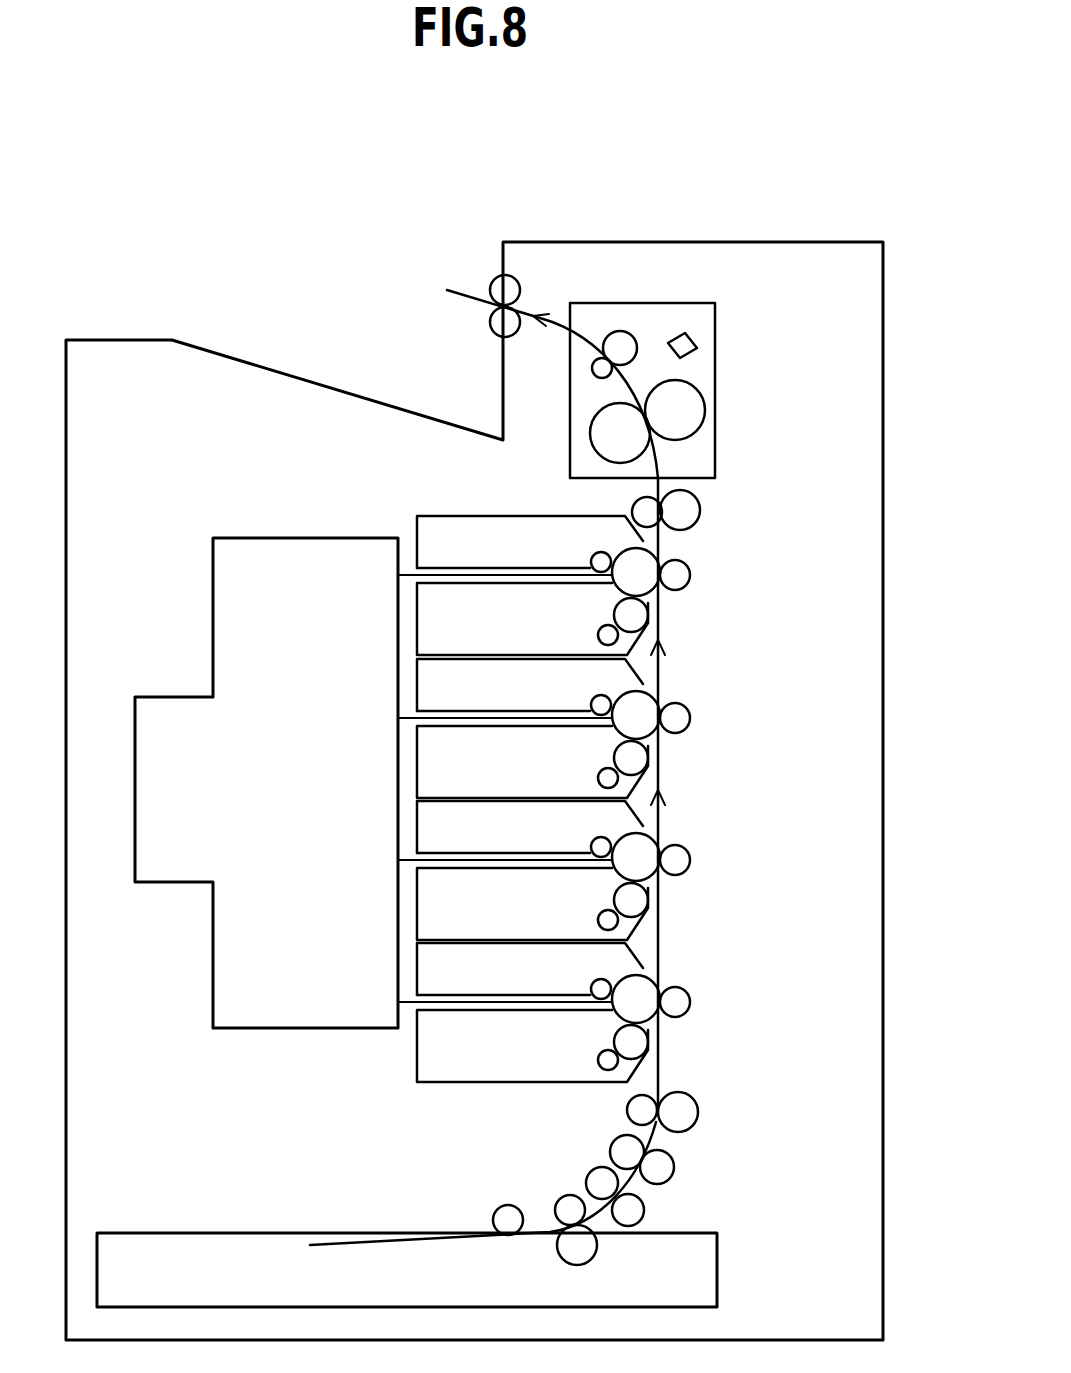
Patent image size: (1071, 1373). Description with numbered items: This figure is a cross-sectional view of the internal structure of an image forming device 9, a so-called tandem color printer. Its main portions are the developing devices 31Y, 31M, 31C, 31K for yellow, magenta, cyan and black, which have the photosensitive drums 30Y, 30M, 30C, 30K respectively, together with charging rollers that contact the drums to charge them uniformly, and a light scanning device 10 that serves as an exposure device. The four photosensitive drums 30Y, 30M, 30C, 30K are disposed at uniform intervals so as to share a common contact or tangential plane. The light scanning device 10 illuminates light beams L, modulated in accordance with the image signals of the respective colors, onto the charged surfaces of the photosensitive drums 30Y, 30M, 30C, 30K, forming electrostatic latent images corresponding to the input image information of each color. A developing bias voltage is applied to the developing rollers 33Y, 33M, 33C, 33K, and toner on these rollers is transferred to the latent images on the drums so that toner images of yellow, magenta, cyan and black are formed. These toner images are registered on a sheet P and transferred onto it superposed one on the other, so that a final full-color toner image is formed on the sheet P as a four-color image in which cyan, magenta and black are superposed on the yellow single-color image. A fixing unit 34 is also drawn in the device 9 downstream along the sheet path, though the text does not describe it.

The image forming device 9 is at (153, 253).
The light scanning device 10 is at (233, 620).
The light beams L is at (412, 573).
The developing device 31K is at (450, 517).
The developing device 31C is at (450, 693).
The developing device 31M is at (450, 837).
The developing device 31Y is at (450, 980).
The photosensitive drum 30K is at (638, 560).
The photosensitive drum 30C is at (638, 703).
The photosensitive drum 30M is at (638, 845).
The photosensitive drum 30Y is at (638, 987).
The developing roller 33K is at (637, 617).
The developing roller 33C is at (637, 760).
The developing roller 33M is at (637, 902).
The developing roller 33Y is at (637, 1044).
The fixing unit 34 is at (657, 320).
The sheet P is at (658, 1072).